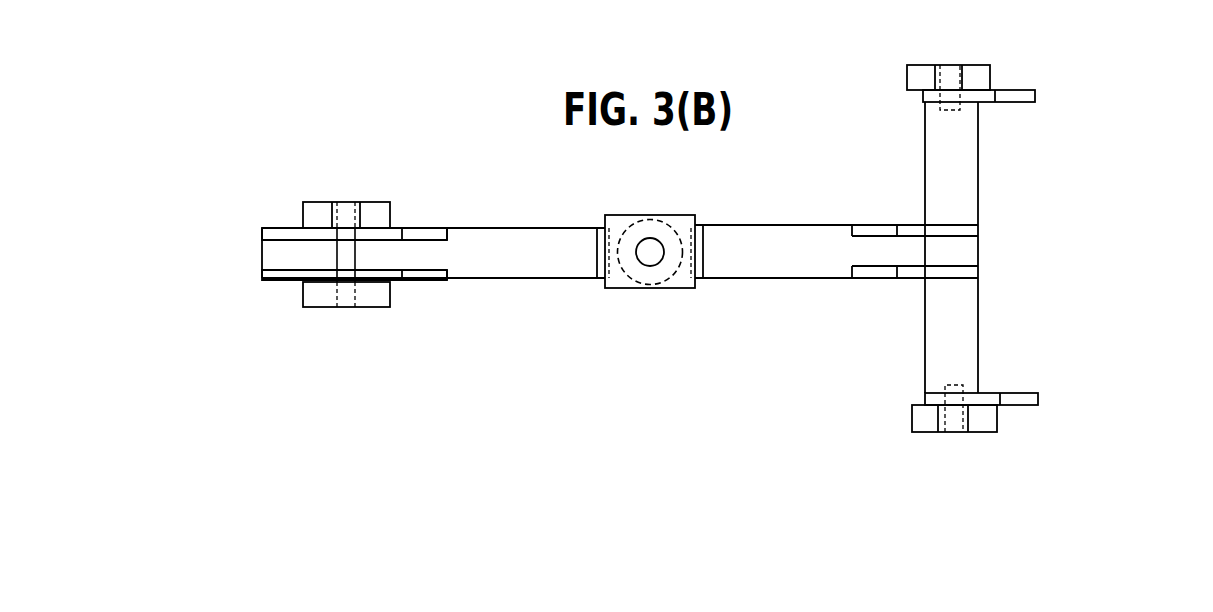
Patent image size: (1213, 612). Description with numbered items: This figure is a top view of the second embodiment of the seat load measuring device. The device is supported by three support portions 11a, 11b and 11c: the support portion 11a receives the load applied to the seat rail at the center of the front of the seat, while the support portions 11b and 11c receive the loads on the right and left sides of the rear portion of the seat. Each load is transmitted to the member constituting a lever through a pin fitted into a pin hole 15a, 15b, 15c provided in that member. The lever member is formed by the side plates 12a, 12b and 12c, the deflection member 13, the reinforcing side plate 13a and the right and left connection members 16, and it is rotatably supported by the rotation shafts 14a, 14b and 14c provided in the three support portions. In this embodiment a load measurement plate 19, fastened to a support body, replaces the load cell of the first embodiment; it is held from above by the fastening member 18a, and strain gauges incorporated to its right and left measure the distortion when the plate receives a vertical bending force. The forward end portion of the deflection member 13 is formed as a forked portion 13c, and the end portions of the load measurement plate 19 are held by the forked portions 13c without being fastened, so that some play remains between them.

The support portion 11a is at (392, 222).
The support portion 11b is at (985, 75).
The support portion 11c is at (990, 420).
The side plate 12a is at (262, 236).
The side plate 12b is at (1037, 95).
The side plate 12c is at (1038, 398).
The deflection member 13 is at (565, 228).
The reinforcing side plate 13a is at (452, 230).
The forked portion 13c is at (605, 285).
The rotation shaft 14a is at (349, 203).
The rotation shaft 14b is at (950, 66).
The rotation shaft 14c is at (952, 432).
The pin hole 15a is at (293, 232).
The pin hole 15b is at (1010, 105).
The pin hole 15c is at (1003, 397).
The connection member 16 is at (965, 312).
The fastening member 18a is at (651, 240).
The load measurement plate 19 is at (688, 215).